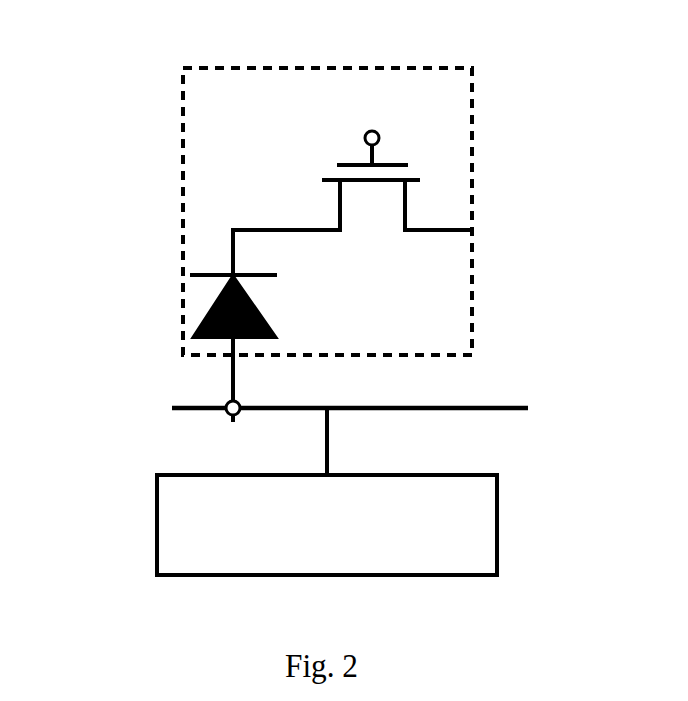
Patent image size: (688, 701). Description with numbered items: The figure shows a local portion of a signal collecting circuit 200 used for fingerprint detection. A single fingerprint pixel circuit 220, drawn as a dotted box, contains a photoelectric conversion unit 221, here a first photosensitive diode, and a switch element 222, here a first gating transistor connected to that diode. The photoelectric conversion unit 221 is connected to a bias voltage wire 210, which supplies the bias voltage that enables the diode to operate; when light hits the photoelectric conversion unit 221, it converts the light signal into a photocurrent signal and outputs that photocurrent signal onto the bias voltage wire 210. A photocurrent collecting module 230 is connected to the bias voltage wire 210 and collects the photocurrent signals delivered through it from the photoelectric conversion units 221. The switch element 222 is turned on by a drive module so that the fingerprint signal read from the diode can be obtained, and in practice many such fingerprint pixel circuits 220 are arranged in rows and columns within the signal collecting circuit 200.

The signal collecting circuit 200 is at (108, 63).
The fingerprint pixel circuit 220 is at (473, 100).
The photoelectric conversion unit 221 is at (213, 297).
The switch element 222 is at (420, 180).
The bias voltage wire 210 is at (490, 407).
The photocurrent collecting module 230 is at (498, 516).